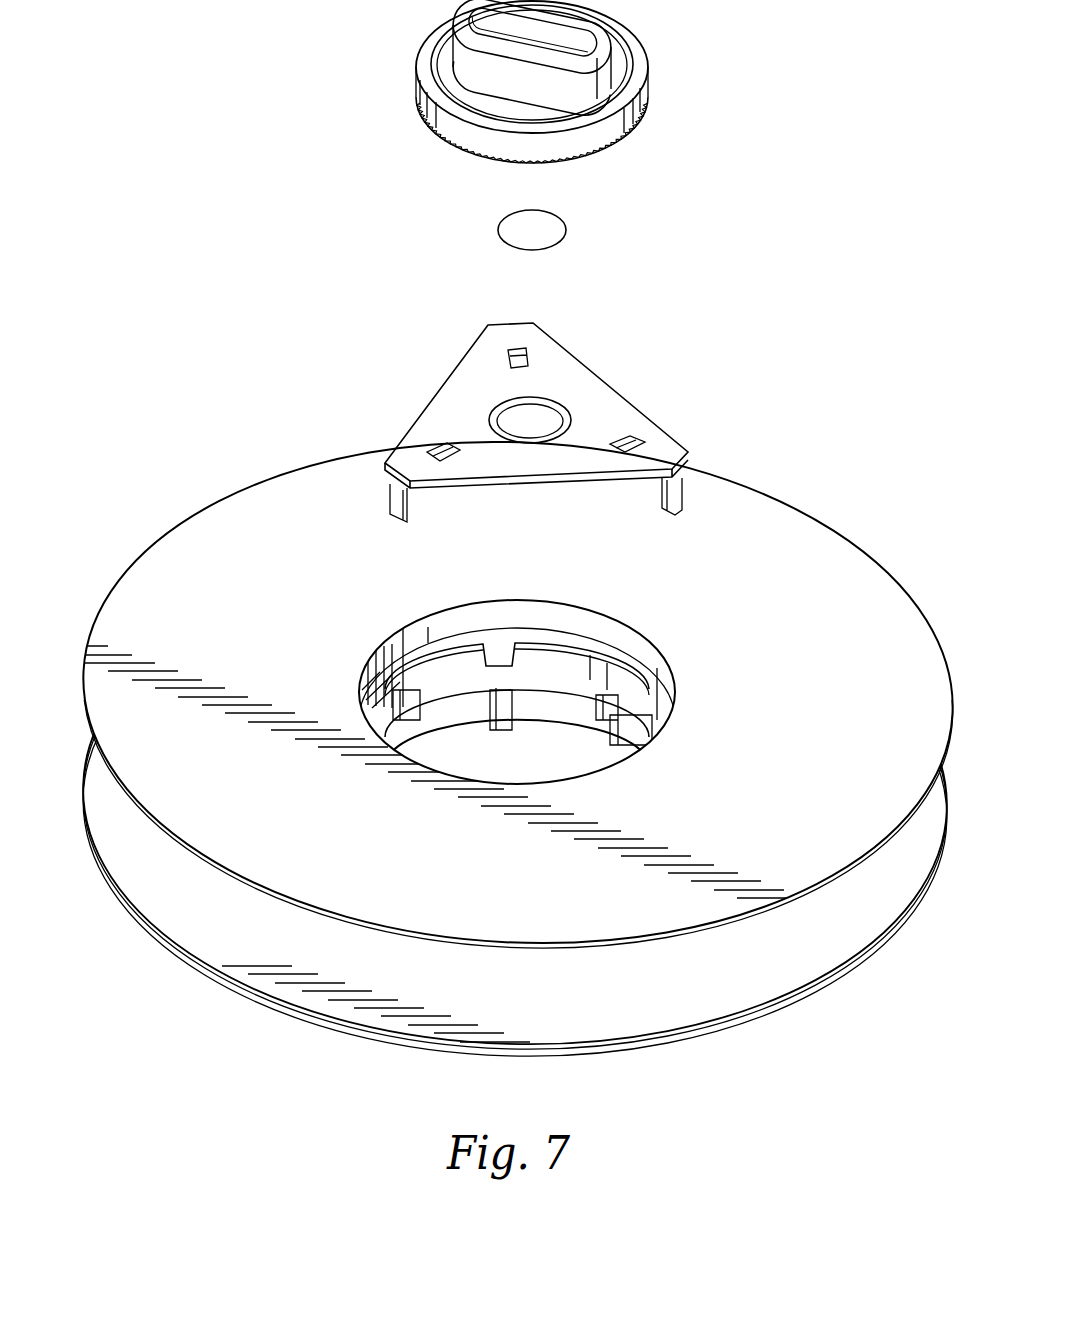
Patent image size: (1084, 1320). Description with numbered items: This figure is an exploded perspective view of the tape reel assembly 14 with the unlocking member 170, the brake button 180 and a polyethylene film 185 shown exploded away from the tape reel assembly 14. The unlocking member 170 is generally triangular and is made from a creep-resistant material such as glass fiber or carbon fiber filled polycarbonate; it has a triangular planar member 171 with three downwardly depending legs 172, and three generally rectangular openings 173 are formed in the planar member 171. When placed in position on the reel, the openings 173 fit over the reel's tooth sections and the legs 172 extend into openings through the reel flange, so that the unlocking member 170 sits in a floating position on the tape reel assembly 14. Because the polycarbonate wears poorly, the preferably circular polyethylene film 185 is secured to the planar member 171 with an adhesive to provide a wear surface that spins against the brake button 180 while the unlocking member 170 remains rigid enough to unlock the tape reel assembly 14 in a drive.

The tape reel assembly 14 is at (846, 535).
The unlocking member 170 is at (526, 411).
The triangular planar member 171 is at (585, 405).
The legs 172 is at (396, 492).
The rectangular openings 173 is at (508, 355).
The brake button 180 is at (642, 103).
The polyethylene film 185 is at (567, 230).